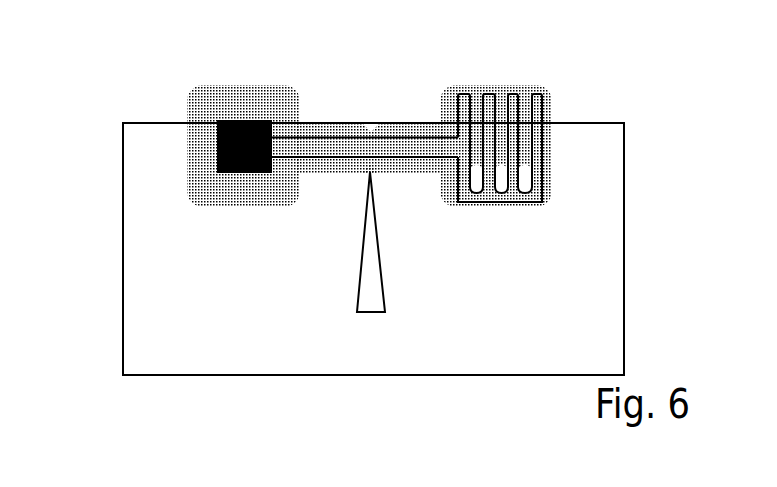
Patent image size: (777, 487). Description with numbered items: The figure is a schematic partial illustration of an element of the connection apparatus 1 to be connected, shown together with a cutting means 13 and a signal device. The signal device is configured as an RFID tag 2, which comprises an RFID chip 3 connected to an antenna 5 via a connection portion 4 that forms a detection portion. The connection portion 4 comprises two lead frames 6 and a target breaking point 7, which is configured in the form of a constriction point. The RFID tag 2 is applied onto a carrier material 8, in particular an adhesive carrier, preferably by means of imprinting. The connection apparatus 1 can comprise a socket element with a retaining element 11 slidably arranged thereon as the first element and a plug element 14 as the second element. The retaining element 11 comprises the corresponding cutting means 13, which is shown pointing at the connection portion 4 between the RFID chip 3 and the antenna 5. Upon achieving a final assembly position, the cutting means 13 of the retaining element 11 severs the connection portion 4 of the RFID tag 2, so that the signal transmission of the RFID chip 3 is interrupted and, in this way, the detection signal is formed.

The connection apparatus 1 is at (638, 58).
The RFID tag 2 is at (721, 37).
The RFID chip 3 is at (207, 100).
The connection portion 4 is at (325, 165).
The antenna 5 is at (549, 143).
The lead frames 6 is at (330, 135).
The target breaking point 7 is at (375, 115).
The carrier material 8 is at (205, 190).
The retaining element 11 is at (495, 357).
The cutting means 13 is at (369, 299).
The plug element 14 is at (607, 232).